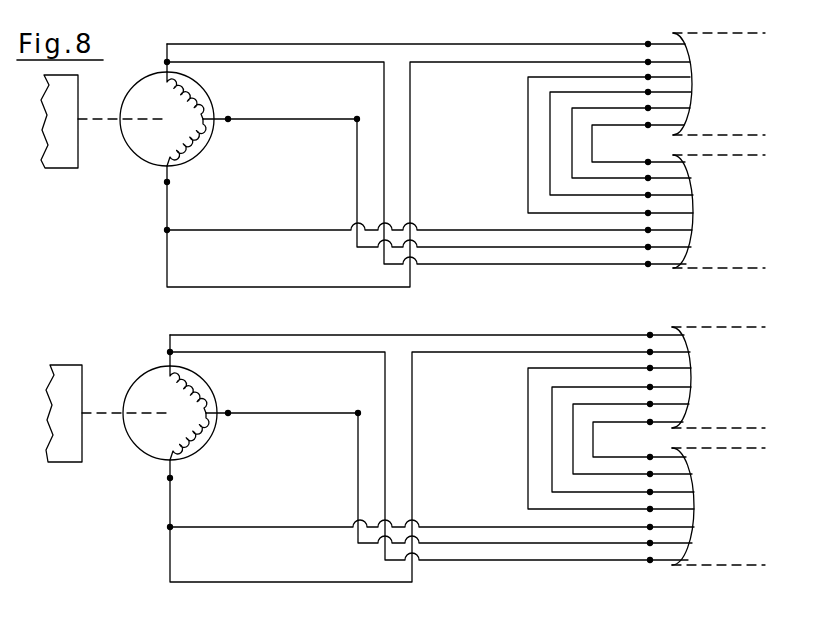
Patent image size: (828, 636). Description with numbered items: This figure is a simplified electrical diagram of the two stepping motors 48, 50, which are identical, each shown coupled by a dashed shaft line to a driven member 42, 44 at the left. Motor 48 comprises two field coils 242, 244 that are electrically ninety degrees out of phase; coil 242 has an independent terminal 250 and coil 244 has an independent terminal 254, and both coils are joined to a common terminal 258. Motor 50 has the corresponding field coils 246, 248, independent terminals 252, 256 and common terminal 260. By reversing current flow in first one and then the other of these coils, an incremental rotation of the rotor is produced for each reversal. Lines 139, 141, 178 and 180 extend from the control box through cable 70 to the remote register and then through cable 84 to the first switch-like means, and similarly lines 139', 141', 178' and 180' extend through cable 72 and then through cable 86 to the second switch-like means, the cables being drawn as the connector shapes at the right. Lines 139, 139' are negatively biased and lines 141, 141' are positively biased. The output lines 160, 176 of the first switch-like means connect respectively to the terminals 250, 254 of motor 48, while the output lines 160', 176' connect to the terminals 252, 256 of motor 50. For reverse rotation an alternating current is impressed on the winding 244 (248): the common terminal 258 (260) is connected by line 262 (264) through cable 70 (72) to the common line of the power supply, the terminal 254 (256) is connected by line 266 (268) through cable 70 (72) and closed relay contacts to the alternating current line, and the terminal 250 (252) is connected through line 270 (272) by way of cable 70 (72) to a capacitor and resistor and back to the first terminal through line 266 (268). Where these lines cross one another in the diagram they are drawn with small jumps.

The first wheel 42 is at (78, 100).
The second wheel 44 is at (70, 365).
The stepping motor 48 is at (144, 162).
The stepping motor 50 is at (138, 384).
The cable 70 is at (738, 268).
The cable 72 is at (733, 565).
The cable 84 is at (670, 35).
The cable 86 is at (670, 328).
The line 139 is at (637, 140).
The line 141 is at (650, 141).
The output line 160 is at (455, 45).
The output line 176 is at (455, 165).
The line 178 is at (631, 143).
The line 180 is at (638, 144).
The line 139' is at (641, 434).
The line 141' is at (651, 436).
The output line 160' is at (459, 335).
The output line 176' is at (460, 458).
The line 178' is at (632, 439).
The line 180' is at (639, 440).
The field coil 242 is at (202, 113).
The field coil 244 is at (201, 137).
The field coil 246 is at (206, 403).
The field coil 248 is at (202, 437).
The terminal 250 is at (170, 63).
The terminal 252 is at (172, 361).
The terminal 254 is at (170, 183).
The terminal 256 is at (172, 480).
The common terminal 258 is at (228, 121).
The common terminal 260 is at (228, 415).
The line 262 is at (312, 119).
The line 264 is at (322, 413).
The line 266 is at (268, 230).
The line 268 is at (265, 527).
The line 270 is at (300, 62).
The line 272 is at (283, 352).